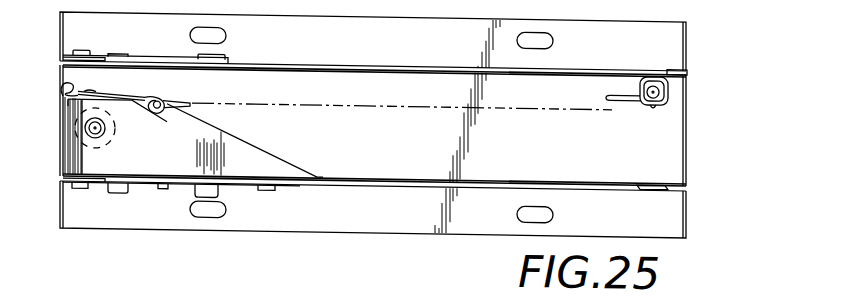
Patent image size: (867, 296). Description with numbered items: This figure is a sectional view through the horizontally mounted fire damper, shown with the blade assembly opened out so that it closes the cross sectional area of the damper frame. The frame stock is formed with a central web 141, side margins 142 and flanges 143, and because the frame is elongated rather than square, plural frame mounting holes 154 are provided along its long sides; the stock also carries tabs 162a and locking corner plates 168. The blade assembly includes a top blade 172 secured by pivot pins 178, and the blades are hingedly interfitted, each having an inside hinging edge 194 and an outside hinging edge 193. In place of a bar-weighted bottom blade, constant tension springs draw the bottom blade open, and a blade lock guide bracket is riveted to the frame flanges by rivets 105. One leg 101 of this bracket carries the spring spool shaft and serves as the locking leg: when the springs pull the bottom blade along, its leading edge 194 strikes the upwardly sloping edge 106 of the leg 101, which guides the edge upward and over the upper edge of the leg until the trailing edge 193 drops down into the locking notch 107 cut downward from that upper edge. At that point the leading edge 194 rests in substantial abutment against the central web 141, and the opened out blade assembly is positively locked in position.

The side margins 142 is at (403, 22).
The flanges 143 is at (325, 62).
The frame mounting holes 154 is at (536, 25).
The central web 141 is at (60, 141).
The locking corner plates 168 is at (172, 60).
The tabs 162a is at (116, 51).
The rivets 105 is at (270, 188).
The inside hinging edge 194 is at (70, 85).
The outside hinging edge 193 is at (155, 124).
The locking notch 107 is at (137, 110).
The leg of blade lock guide bracket 101 is at (243, 147).
The upwardly sloping edge 106 is at (280, 151).
The top blade 172 is at (638, 99).
The pivot pins 178 is at (642, 82).